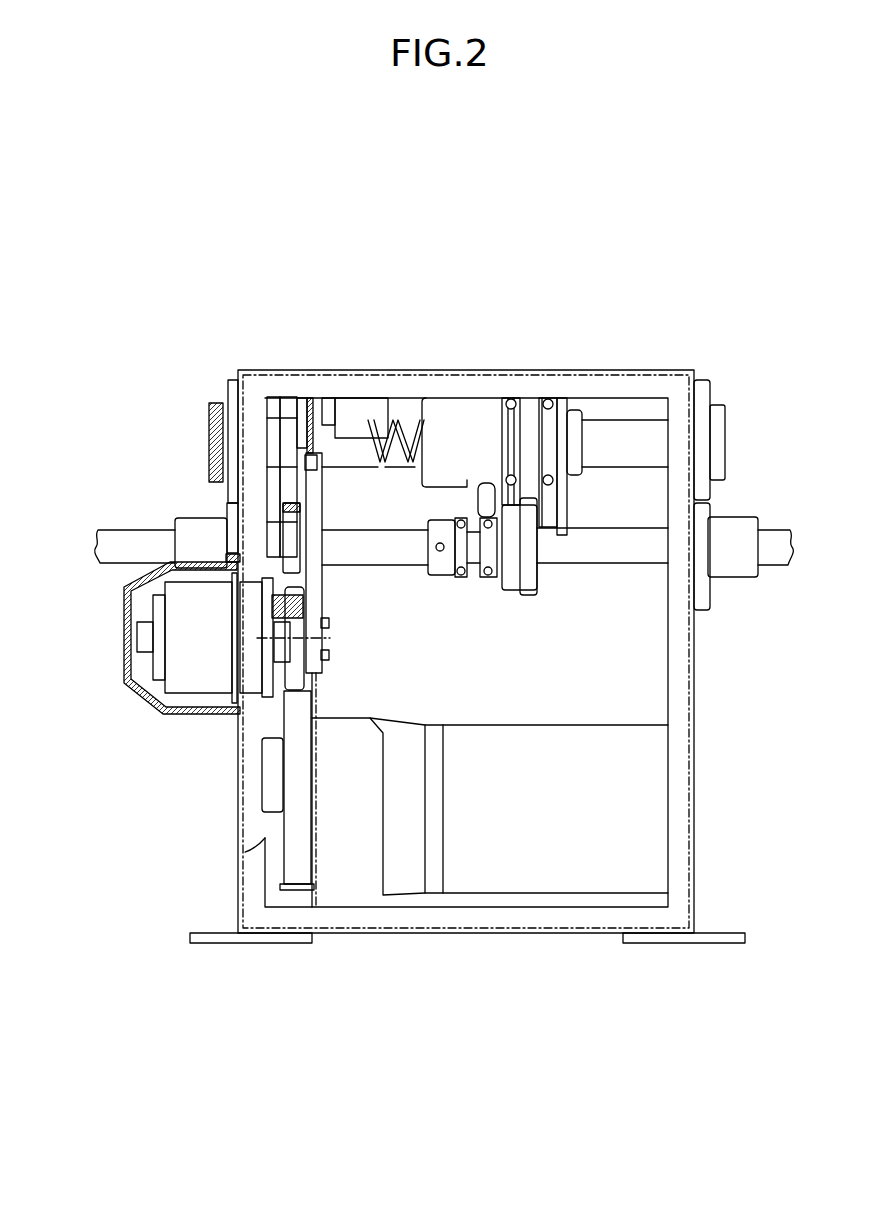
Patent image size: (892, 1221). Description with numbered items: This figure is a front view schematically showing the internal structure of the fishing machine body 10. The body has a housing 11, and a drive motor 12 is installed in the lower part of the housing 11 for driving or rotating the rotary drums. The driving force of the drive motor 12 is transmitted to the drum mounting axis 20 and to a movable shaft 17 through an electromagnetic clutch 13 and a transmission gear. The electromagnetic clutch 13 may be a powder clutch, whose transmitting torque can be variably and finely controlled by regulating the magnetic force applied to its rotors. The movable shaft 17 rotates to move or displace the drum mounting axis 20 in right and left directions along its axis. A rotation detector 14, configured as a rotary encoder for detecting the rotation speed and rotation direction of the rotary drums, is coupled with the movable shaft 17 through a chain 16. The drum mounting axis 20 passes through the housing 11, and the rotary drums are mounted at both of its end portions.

The fishing machine body 10 is at (470, 205).
The housing 11 is at (522, 382).
The drive motor 12 is at (550, 850).
The electromagnetic clutch 13 is at (170, 663).
The rotation detector 14 is at (356, 418).
The chain 16 is at (305, 447).
The movable shaft 17 is at (620, 432).
The drum mounting axis 20 is at (131, 540).